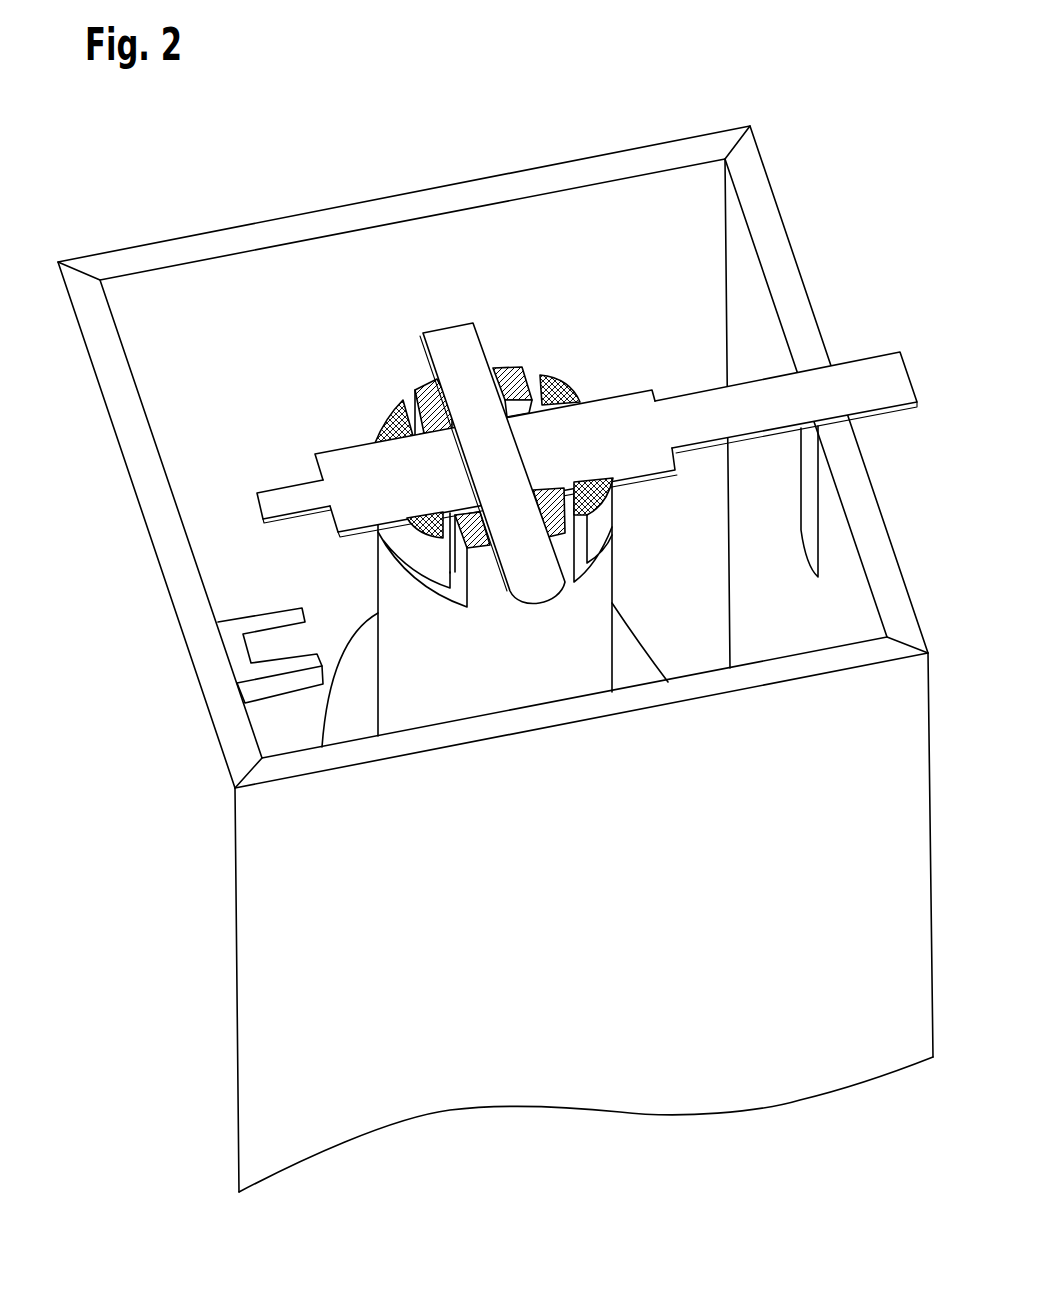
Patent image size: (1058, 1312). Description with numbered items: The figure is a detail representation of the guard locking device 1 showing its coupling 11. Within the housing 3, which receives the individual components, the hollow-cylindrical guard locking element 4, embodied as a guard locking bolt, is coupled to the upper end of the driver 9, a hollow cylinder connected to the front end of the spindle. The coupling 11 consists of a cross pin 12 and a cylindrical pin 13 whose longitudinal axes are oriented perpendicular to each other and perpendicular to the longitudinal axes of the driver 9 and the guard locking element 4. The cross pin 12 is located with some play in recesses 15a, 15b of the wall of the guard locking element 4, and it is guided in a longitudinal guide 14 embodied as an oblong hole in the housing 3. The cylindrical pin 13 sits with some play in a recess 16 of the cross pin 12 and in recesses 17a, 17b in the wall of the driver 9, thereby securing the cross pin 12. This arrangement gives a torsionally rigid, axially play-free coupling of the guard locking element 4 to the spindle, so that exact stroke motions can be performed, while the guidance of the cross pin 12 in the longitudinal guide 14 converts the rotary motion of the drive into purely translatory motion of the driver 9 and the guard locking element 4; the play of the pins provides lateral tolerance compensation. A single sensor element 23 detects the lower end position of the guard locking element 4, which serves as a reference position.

The guard locking device 1 is at (35, 912).
The housing 3 is at (765, 205).
The guard locking element 4 is at (603, 514).
The driver 9 is at (618, 583).
The coupling 11 is at (279, 352).
The cross pin 12 is at (378, 499).
The cylindrical pin 13 is at (454, 345).
The longitudinal guide 14 is at (808, 498).
The recess 15a is at (375, 440).
The recess 15b is at (582, 402).
The recess 16 is at (530, 444).
The recess 17a is at (495, 368).
The recess 17b is at (497, 538).
The sensor element 23 is at (248, 621).